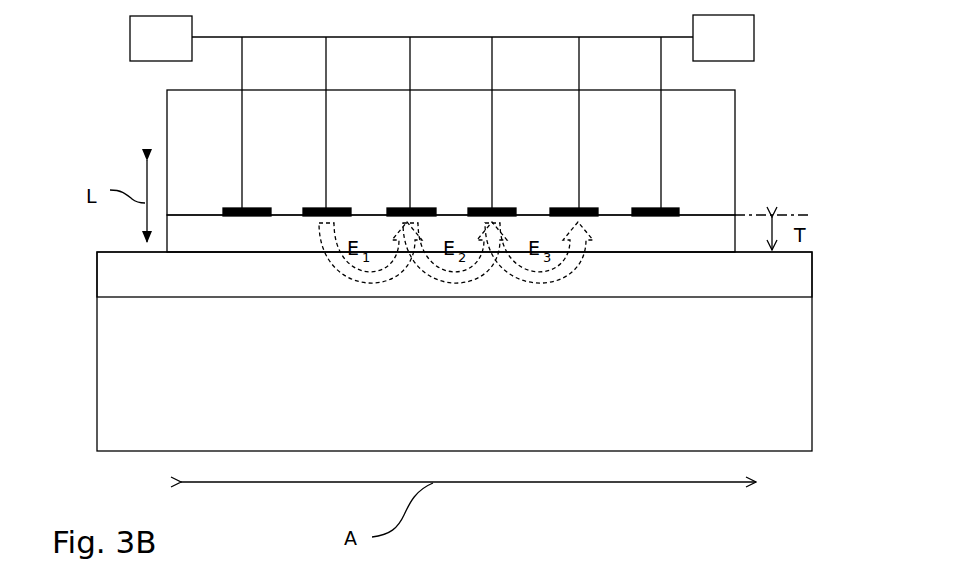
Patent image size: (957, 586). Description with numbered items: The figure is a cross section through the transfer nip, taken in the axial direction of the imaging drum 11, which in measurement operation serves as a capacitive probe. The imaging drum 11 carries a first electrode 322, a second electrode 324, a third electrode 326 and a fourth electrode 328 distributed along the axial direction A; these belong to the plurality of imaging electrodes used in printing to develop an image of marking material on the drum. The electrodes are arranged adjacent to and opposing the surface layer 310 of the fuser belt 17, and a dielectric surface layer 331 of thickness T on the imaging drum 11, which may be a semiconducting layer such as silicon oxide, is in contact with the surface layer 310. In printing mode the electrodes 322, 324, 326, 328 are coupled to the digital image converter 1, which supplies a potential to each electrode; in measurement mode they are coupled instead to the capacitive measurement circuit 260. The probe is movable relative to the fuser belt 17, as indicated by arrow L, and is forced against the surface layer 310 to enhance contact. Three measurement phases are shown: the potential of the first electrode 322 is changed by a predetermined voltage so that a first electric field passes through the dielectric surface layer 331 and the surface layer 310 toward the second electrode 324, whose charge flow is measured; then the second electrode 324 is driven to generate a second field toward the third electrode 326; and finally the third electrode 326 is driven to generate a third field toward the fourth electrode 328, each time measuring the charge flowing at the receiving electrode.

The digital image converter 1 is at (154, 50).
The capacitive measurement circuit 260 is at (705, 50).
The imaging drum 11 is at (157, 115).
The first electrode 322 is at (305, 208).
The second electrode 324 is at (390, 207).
The third electrode 326 is at (489, 207).
The fourth electrode 328 is at (568, 208).
The dielectric surface layer 331 is at (268, 236).
The surface layer 310 is at (157, 280).
The fuser belt 17 is at (461, 427).